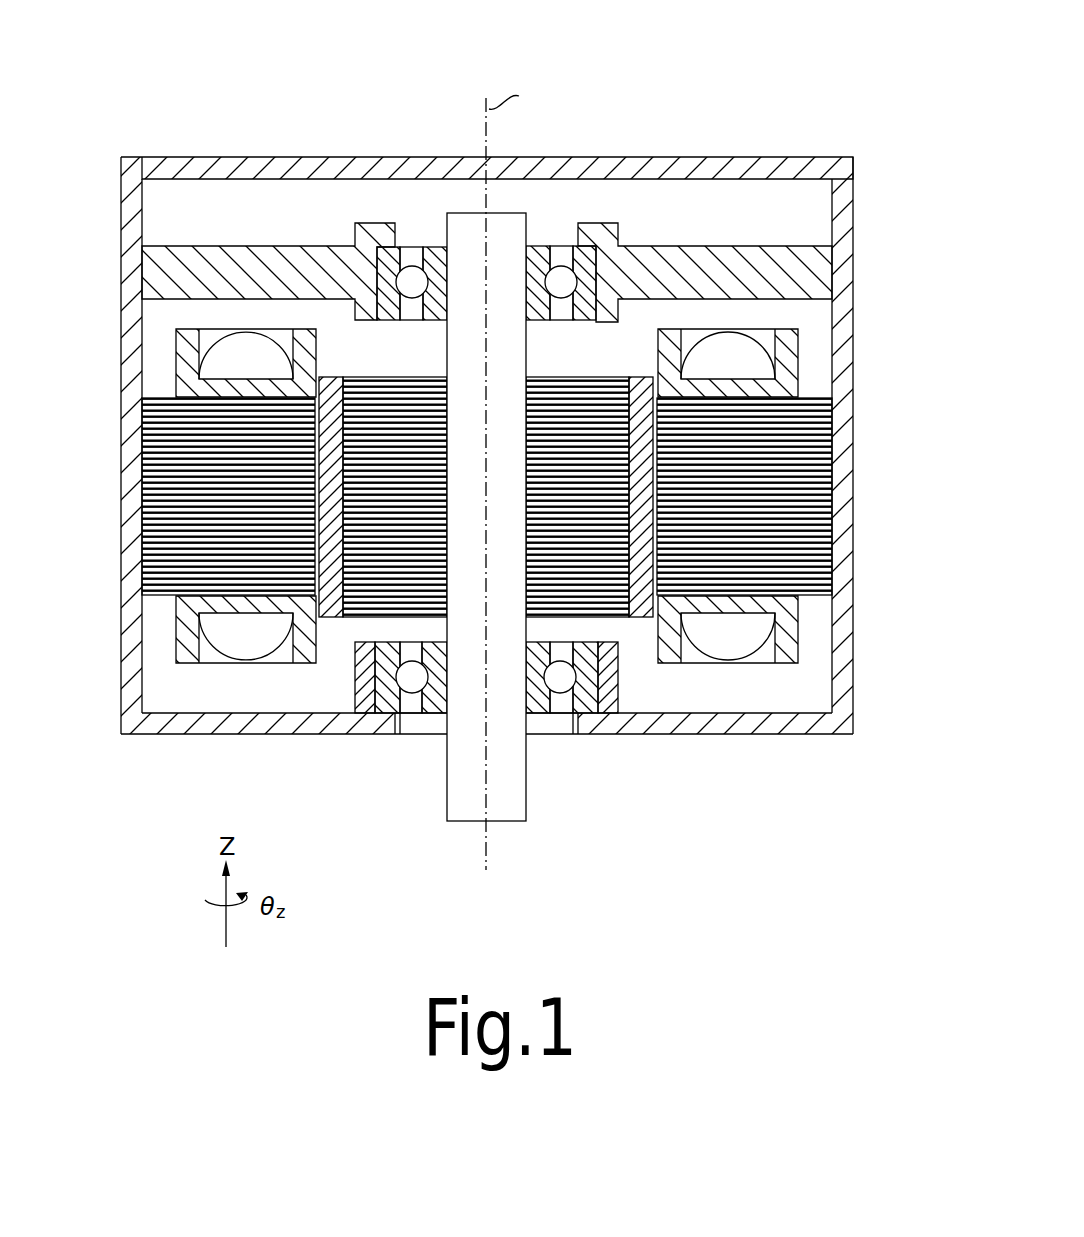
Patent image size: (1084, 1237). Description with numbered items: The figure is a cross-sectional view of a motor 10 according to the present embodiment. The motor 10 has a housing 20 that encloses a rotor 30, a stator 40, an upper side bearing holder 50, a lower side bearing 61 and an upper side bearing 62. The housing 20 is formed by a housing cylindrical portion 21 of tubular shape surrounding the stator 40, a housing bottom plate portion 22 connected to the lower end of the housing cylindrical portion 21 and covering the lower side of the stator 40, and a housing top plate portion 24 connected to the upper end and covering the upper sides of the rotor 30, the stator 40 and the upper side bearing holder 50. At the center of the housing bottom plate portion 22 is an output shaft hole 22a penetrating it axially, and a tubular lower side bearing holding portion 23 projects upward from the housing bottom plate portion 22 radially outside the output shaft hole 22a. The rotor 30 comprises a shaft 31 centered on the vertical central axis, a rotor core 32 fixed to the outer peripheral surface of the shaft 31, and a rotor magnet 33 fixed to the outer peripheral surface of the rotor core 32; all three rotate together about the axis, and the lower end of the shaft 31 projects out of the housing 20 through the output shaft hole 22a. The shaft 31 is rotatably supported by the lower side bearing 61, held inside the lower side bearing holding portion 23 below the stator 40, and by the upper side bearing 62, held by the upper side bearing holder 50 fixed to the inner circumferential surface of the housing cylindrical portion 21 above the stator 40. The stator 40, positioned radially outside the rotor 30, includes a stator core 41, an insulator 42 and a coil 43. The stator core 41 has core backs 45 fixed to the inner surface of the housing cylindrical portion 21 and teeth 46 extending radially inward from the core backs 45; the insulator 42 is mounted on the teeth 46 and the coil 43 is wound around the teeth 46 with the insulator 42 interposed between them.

The motor 10 is at (500, 438).
The housing 20 is at (526, 466).
The housing cylindrical portion 21 is at (843, 533).
The housing bottom plate portion 22 is at (487, 773).
The output shaft hole 22a is at (563, 732).
The lower side bearing holding portion 23 is at (363, 688).
The housing top plate portion 24 is at (690, 163).
The rotor 30 is at (364, 517).
The shaft 31 is at (518, 787).
The rotor core 32 is at (390, 500).
The rotor magnet 33 is at (332, 477).
The stator 40 is at (496, 557).
The stator core 41 is at (496, 495).
The insulator 42 is at (788, 632).
The coil 43 is at (735, 645).
The core back 45 is at (153, 468).
The tooth 46 is at (227, 430).
The upper side bearing holder 50 is at (253, 262).
The lower side bearing 61 is at (412, 690).
The upper side bearing 62 is at (410, 277).